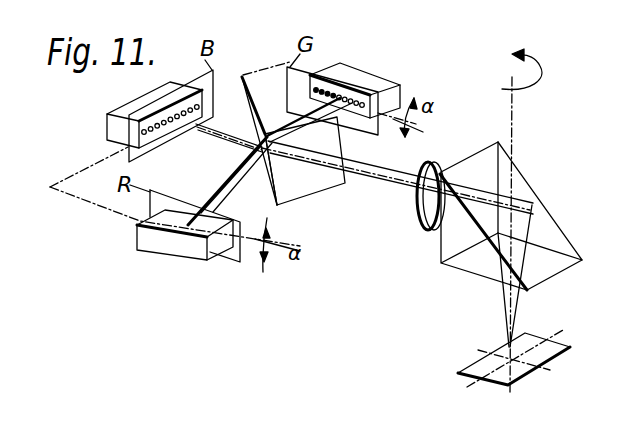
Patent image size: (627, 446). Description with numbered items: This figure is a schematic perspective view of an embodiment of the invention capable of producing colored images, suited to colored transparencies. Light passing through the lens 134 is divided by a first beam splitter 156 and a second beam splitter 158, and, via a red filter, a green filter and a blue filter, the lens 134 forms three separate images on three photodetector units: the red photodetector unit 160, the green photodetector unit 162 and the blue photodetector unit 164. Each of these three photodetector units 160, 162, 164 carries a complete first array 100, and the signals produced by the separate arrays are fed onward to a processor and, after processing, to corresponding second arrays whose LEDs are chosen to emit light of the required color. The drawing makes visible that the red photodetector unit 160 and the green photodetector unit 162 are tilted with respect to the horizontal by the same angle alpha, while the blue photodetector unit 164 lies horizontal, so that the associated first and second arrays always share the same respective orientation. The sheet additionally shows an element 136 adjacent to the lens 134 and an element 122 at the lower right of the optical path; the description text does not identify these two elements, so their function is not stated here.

The photodetector unit 164 is at (148, 96).
The first array 100 is at (161, 133).
The second beam splitter 158 is at (262, 162).
The first beam splitter 156 is at (315, 188).
The photodetector unit 160 is at (168, 243).
The photodetector unit 162 is at (363, 78).
The lens 134 is at (436, 164).
The rotating prism 136 is at (528, 190).
The recording medium 122 is at (555, 345).